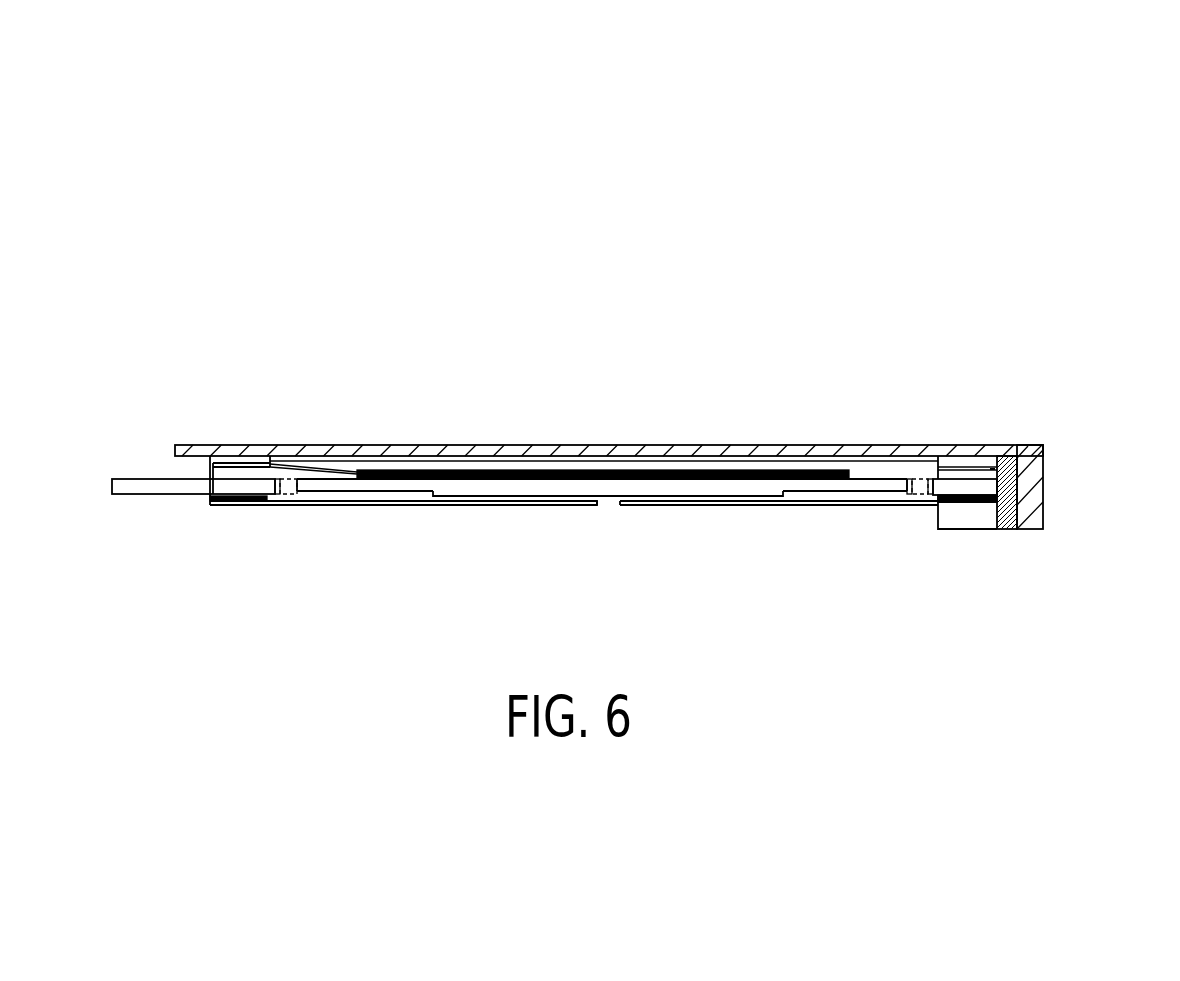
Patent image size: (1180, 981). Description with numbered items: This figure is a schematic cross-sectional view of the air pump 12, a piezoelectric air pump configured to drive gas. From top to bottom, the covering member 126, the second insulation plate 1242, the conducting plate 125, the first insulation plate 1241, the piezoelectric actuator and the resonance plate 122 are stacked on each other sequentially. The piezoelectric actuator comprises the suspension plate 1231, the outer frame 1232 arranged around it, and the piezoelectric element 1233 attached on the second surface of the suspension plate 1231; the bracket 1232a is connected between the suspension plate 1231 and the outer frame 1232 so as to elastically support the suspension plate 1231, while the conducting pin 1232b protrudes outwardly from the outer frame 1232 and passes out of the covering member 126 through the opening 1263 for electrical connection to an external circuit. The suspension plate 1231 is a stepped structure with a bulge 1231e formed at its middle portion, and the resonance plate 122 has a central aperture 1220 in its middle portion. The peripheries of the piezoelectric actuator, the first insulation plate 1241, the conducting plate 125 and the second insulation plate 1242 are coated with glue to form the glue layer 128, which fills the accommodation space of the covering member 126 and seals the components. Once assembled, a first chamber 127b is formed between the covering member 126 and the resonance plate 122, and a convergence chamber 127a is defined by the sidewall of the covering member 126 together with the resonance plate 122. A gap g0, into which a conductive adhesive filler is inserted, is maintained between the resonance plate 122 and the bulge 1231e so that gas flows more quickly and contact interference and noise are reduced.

The air pump 12 is at (1170, 127).
The opening 1263 is at (172, 472).
The conducting pin 1232b is at (187, 490).
The first chamber 127b is at (302, 463).
The convergence chamber 127a is at (383, 513).
The resonance plate 122 is at (722, 500).
The central aperture 1220 is at (600, 503).
The piezoelectric element 1233 is at (607, 470).
The suspension plate 1231 is at (643, 480).
The bulge 1231e is at (490, 495).
The bracket 1232a is at (912, 480).
The second insulation plate 1242 is at (940, 464).
The conducting plate 125 is at (958, 477).
The first insulation plate 1241 is at (965, 487).
The outer frame 1232 is at (973, 493).
The gap g0 is at (980, 483).
The glue layer 128 is at (1017, 463).
The covering member 126 is at (1045, 445).